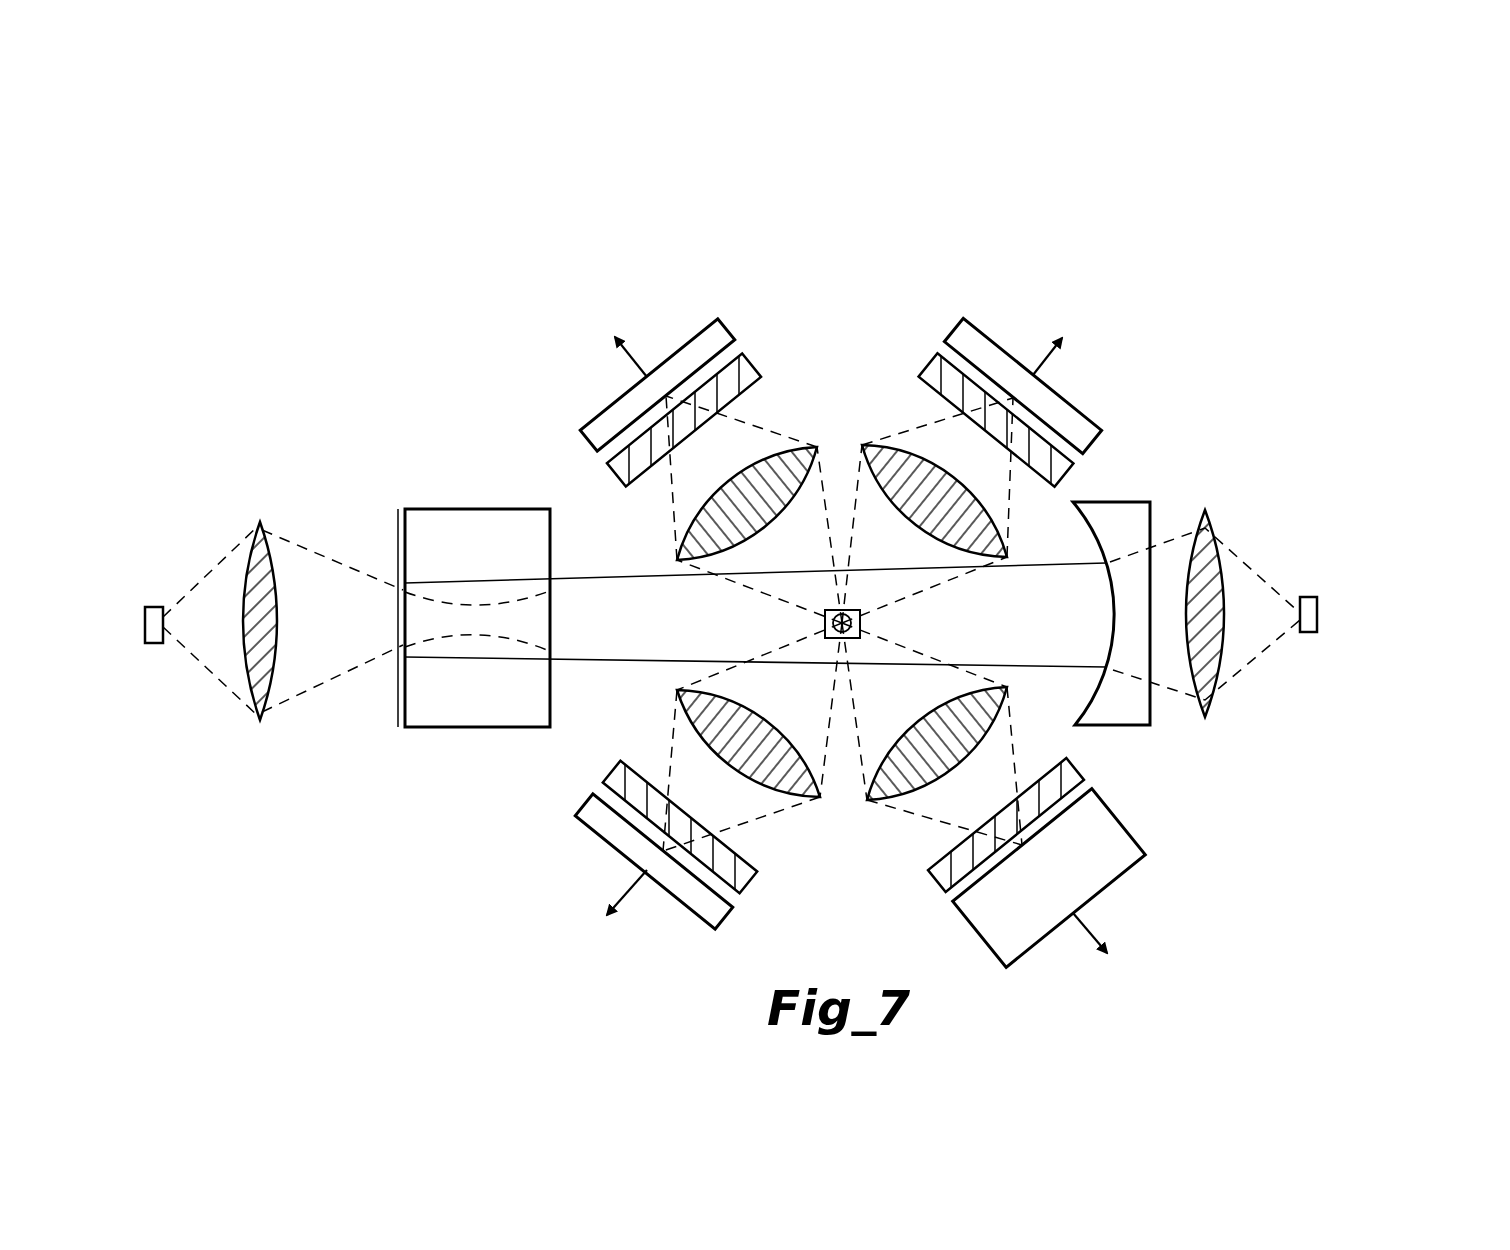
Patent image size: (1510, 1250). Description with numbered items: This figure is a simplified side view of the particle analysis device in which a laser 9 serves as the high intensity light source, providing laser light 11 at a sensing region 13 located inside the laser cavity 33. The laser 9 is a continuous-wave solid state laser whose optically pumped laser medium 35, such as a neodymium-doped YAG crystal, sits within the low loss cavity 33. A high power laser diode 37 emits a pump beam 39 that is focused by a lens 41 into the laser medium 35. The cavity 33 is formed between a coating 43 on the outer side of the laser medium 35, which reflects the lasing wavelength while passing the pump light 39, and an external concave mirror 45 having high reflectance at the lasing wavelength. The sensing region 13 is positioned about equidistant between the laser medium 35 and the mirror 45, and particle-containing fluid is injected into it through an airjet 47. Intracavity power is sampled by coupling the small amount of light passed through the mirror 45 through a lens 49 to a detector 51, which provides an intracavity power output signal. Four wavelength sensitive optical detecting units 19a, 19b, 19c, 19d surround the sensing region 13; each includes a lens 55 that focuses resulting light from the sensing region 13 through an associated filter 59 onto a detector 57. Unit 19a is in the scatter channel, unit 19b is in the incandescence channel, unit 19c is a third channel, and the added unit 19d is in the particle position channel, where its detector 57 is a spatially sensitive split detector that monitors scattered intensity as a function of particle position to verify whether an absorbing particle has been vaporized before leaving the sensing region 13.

The laser 9 is at (350, 524).
The laser light 11 is at (587, 577).
The sensing region 13 is at (851, 621).
The optical detecting unit 19a is at (778, 840).
The optical detecting unit 19b is at (763, 335).
The optical detecting unit 19c is at (938, 333).
The optical detecting unit 19d is at (908, 852).
The laser cavity 33 is at (635, 650).
The laser medium 35 is at (445, 508).
The laser diode 37 is at (158, 643).
The pump beam 39 is at (217, 566).
The lens 41 is at (263, 713).
The coating 43 is at (397, 700).
The mirror 45 is at (1122, 725).
The airjet 47 is at (863, 624).
The lens 49 is at (1212, 700).
The detector 51 is at (1308, 594).
The lens 55 is at (680, 553).
The detector 57 is at (580, 440).
The filter 59 is at (610, 480).